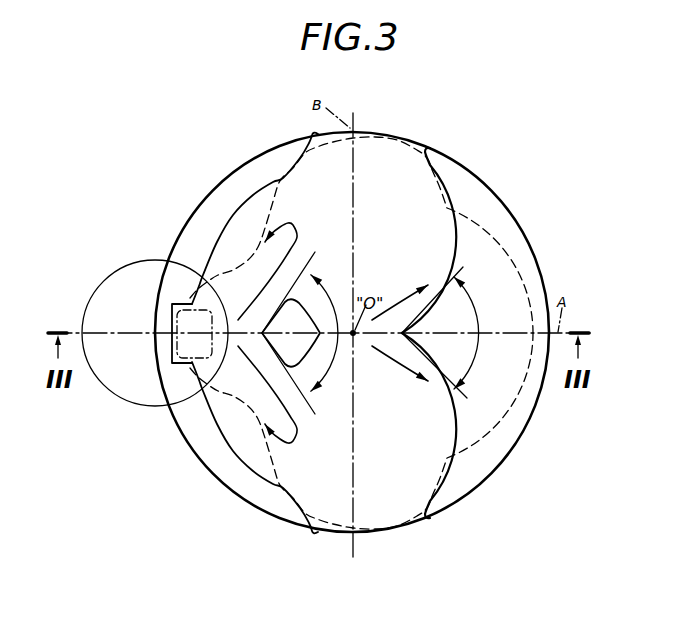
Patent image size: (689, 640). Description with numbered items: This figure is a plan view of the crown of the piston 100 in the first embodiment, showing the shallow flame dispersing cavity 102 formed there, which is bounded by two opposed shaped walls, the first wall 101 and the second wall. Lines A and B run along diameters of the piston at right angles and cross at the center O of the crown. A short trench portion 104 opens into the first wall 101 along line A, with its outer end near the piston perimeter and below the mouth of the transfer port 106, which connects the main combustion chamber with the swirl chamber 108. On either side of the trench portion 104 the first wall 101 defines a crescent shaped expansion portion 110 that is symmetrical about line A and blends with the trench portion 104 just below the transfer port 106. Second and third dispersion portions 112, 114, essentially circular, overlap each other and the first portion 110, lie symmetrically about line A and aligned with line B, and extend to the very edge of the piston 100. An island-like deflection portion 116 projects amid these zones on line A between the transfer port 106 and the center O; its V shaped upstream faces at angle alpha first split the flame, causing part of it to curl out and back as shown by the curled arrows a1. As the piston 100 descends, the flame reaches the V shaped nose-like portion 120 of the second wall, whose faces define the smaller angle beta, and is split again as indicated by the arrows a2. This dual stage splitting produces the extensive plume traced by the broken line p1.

The piston 100 is at (183, 228).
The first wall 101 is at (290, 170).
The cavity 102 is at (447, 188).
The trench portion 104 is at (170, 305).
The transfer port 106 is at (177, 322).
The swirl chamber 108 is at (102, 383).
The first crescent shaped expansion portion 110 is at (226, 420).
The second dispersion portion 112 is at (382, 166).
The third dispersion portion 114 is at (388, 488).
The island-like deflection portion 116 is at (283, 325).
The V shaped nose-like portion 120 is at (420, 338).
The broken line P1 p1 is at (490, 440).
The curled arrows a1 is at (280, 337).
The arrows a2 is at (400, 336).